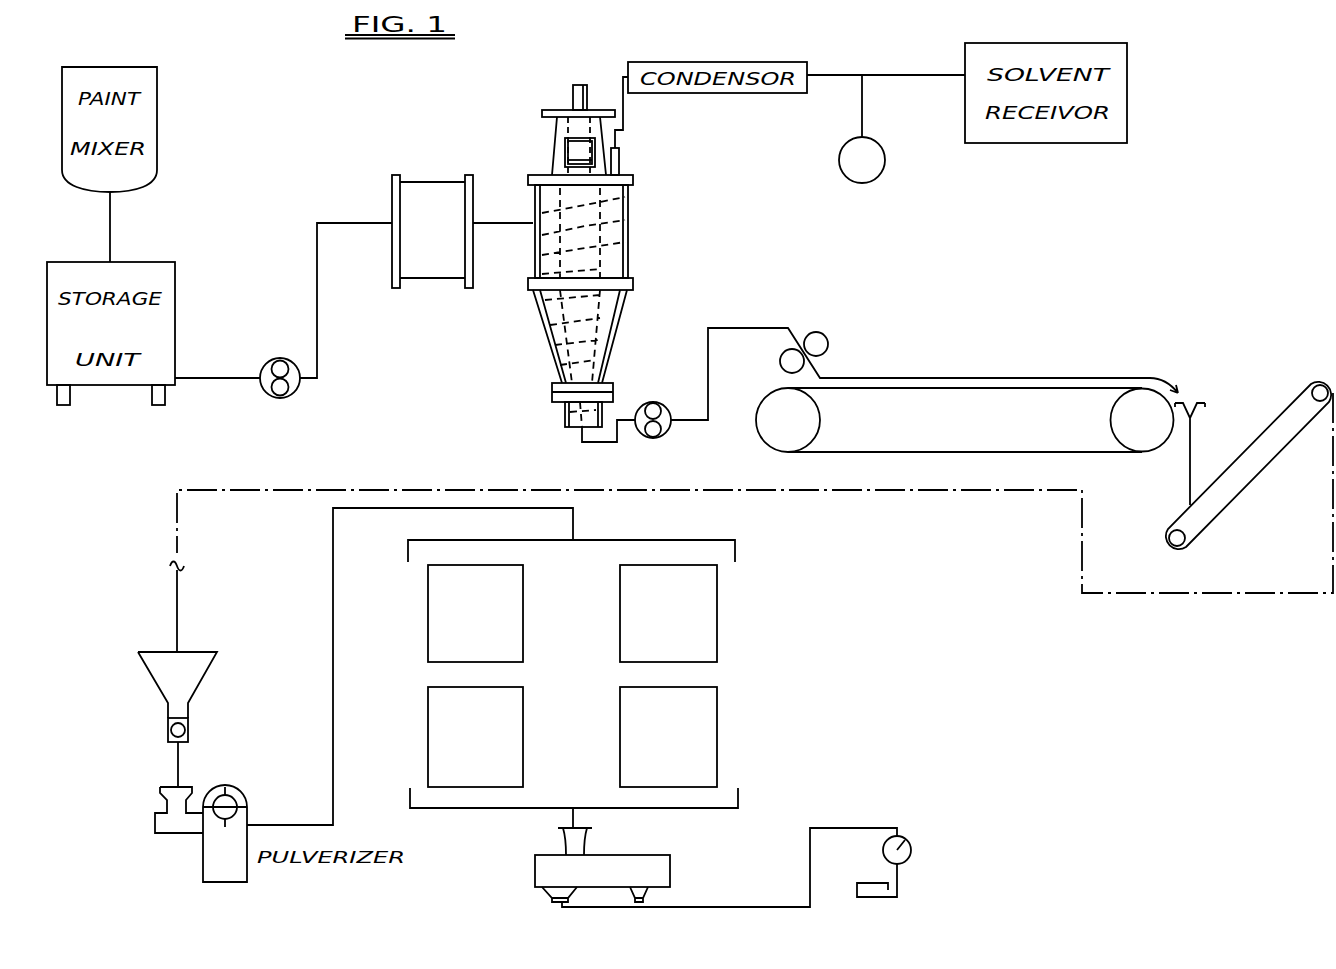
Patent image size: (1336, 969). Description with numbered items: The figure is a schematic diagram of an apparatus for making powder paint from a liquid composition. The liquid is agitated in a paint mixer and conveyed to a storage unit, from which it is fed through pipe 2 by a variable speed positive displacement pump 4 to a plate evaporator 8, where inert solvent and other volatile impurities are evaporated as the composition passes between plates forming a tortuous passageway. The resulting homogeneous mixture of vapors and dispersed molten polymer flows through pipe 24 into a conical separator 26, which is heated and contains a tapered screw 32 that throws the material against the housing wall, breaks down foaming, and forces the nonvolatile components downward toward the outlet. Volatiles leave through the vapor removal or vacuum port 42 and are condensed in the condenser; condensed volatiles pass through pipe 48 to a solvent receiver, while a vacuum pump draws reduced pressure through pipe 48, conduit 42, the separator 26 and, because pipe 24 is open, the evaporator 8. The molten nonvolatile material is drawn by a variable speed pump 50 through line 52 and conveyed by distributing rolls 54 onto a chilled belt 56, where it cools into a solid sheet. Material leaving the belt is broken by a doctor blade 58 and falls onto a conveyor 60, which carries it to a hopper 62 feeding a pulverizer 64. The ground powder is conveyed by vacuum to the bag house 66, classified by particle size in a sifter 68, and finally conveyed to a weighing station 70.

The pipe 2 is at (222, 381).
The variable speed positive displacement pump 4 is at (283, 368).
The plate evaporator 8 is at (381, 195).
The pipe 24 is at (497, 227).
The conical separator 26 is at (652, 225).
The tapered screw 32 is at (632, 248).
The vapor removal or vacuum port 42 is at (620, 155).
The pipe 48 is at (845, 64).
The variable speed pump 50 is at (658, 404).
The line 52 is at (707, 352).
The distributing rolls 54 is at (780, 362).
The chilled belt 56 is at (929, 388).
The doctor blade 58 is at (1184, 391).
The conveyor 60 is at (1253, 447).
The hopper 62 is at (190, 675).
The pulverizer 64 is at (155, 827).
The bag house 66 is at (630, 637).
The sifter 68 is at (535, 872).
The weighing station 70 is at (906, 873).